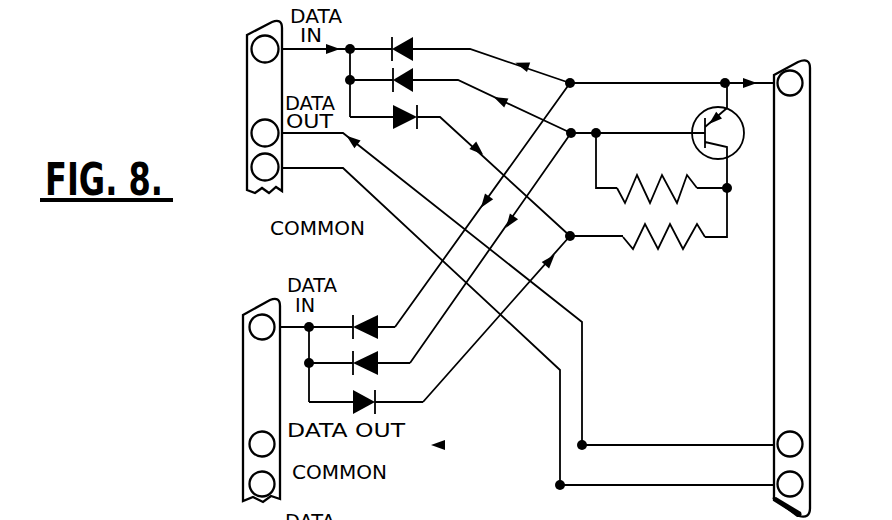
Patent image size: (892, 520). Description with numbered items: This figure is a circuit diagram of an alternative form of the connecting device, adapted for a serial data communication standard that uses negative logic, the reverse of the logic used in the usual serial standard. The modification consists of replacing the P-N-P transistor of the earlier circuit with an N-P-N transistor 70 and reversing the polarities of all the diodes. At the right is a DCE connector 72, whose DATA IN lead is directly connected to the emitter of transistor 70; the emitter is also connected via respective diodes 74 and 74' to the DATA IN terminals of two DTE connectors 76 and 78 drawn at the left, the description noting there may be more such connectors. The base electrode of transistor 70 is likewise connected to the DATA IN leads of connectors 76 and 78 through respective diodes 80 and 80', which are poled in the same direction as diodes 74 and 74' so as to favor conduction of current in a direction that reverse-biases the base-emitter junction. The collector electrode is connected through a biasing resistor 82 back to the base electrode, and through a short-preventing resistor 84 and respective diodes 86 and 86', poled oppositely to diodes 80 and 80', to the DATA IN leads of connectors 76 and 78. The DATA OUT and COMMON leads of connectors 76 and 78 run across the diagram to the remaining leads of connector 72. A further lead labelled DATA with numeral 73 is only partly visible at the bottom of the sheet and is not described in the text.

The N-P-N transistor 70 is at (740, 148).
The DCE connector 72 is at (770, 303).
The data line 73 is at (397, 514).
The diode 74 is at (460, 41).
The diode 74' is at (352, 306).
The DTE connector 76 is at (247, 93).
The DTE connector 78 is at (243, 406).
The diode 80 is at (460, 100).
The diode 80' is at (369, 376).
The biasing resistor 82 is at (645, 180).
The short-preventing resistor 84 is at (658, 245).
The diode 86 is at (460, 170).
The diode 86' is at (366, 395).